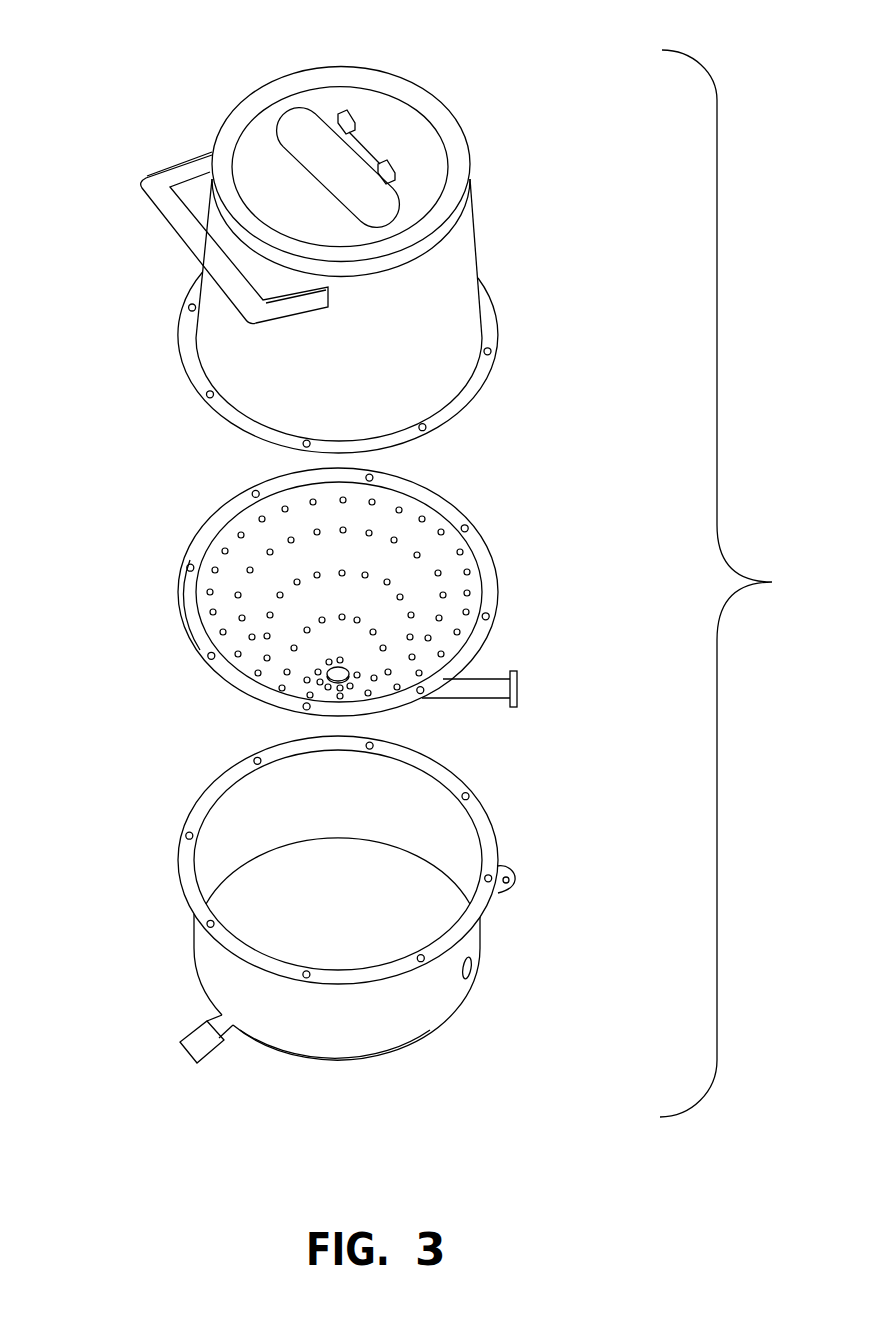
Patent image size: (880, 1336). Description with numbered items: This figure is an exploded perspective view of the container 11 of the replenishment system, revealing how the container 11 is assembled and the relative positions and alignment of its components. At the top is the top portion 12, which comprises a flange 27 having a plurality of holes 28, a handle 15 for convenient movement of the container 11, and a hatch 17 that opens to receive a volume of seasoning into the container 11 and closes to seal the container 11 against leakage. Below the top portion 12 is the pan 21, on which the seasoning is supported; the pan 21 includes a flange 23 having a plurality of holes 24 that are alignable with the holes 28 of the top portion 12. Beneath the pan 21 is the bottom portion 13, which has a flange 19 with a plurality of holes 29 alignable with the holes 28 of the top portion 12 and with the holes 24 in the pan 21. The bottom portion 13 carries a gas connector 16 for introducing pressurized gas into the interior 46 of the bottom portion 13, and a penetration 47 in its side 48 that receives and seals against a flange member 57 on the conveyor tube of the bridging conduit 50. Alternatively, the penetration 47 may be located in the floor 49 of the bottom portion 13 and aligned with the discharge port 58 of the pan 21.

The container 11 is at (737, 583).
The top portion 12 is at (453, 256).
The bottom portion 13 is at (438, 1008).
The handle 15 is at (181, 220).
The gas connector 16 is at (200, 1048).
The hatch 17 is at (318, 130).
The flange 19 is at (437, 771).
The pan 21 is at (492, 543).
The flange 23 is at (188, 636).
The holes 24 is at (492, 614).
The flange 27 is at (497, 313).
The holes 28 is at (491, 351).
The holes 29 is at (183, 835).
The interior 46 is at (427, 914).
The penetration 47 is at (477, 971).
The side 48 is at (365, 1045).
The floor 49 is at (305, 925).
The bridging conduit 50 is at (497, 679).
The flange member 57 is at (517, 702).
The discharge port 58 is at (342, 667).